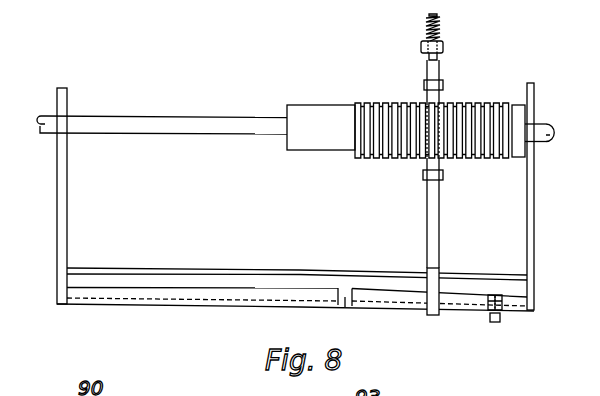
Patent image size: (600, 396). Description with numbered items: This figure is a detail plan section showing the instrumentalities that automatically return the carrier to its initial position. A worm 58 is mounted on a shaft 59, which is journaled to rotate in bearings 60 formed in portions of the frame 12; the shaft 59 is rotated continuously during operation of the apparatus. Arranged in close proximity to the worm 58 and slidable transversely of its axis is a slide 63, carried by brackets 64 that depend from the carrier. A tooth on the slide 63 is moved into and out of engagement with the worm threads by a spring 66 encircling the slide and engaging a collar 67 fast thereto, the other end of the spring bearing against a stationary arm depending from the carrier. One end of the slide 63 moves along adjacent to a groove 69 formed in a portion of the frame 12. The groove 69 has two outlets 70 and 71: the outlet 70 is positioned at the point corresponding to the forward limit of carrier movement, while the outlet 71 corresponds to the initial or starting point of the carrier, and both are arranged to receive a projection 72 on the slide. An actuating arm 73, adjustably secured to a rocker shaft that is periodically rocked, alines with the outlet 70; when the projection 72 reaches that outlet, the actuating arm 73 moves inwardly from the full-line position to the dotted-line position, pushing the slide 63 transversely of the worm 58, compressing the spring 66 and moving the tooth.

The frame 12 is at (196, 306).
The worm 58 is at (374, 104).
The shaft 59 is at (227, 121).
The bearings 60 is at (58, 134).
The slide 63 is at (454, 160).
The brackets 64 is at (443, 85).
The spring 66 is at (441, 31).
The collar 67 is at (443, 48).
The groove 69 is at (323, 284).
The outlet 70 is at (502, 311).
The outlet 71 is at (346, 307).
The projection 72 is at (432, 318).
The actuating arm 73 is at (496, 323).